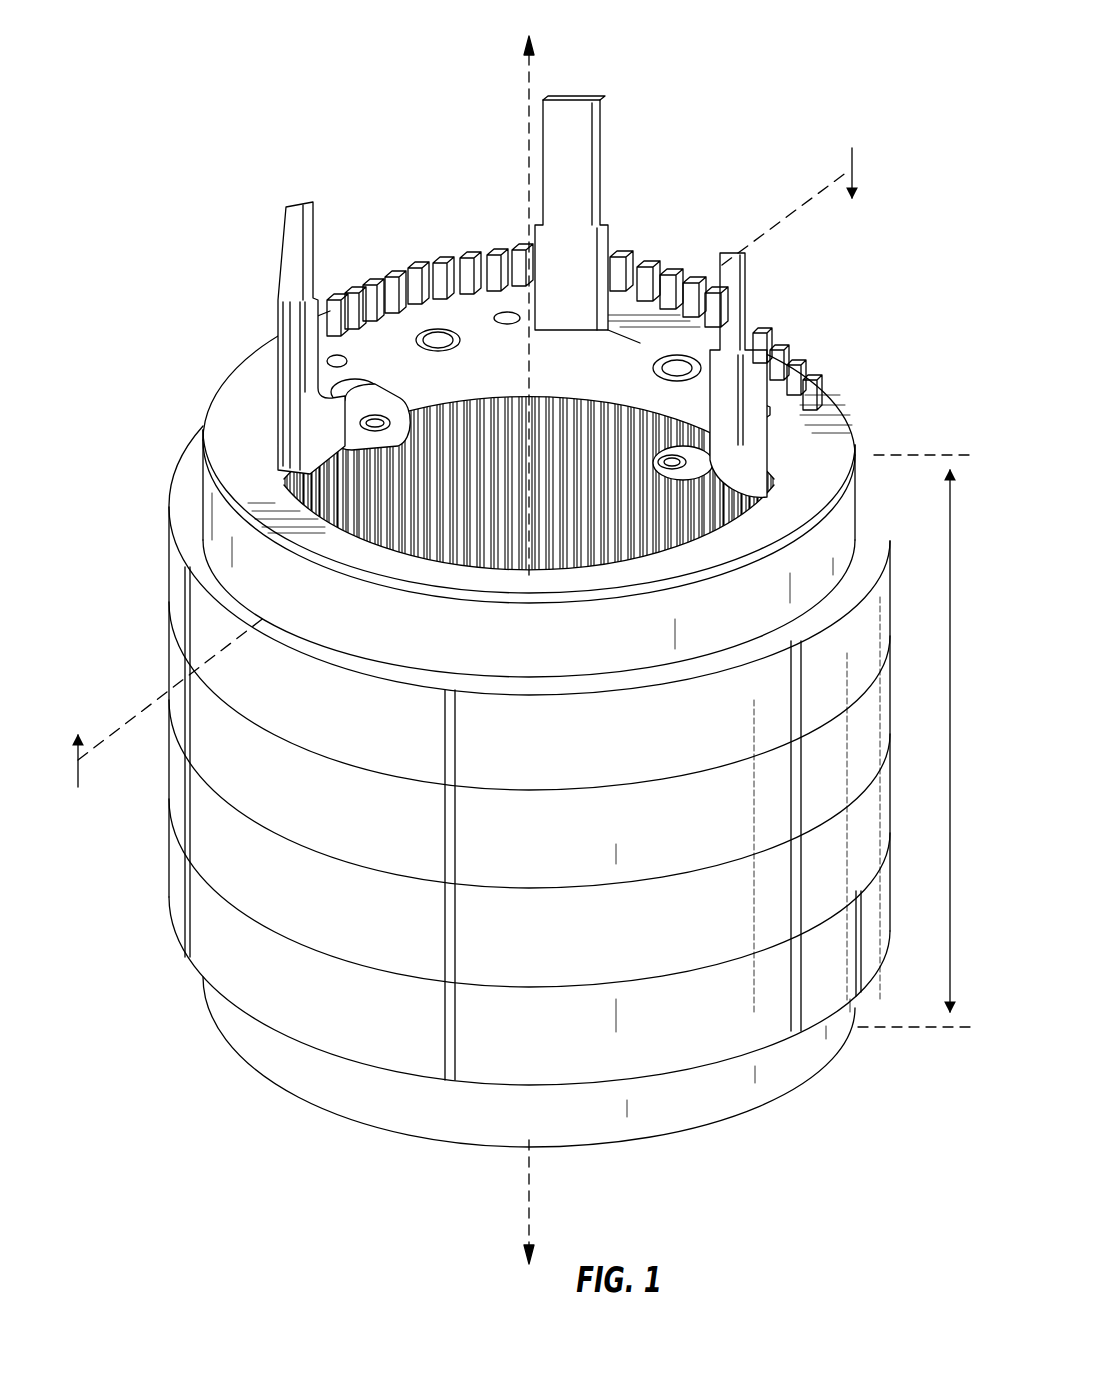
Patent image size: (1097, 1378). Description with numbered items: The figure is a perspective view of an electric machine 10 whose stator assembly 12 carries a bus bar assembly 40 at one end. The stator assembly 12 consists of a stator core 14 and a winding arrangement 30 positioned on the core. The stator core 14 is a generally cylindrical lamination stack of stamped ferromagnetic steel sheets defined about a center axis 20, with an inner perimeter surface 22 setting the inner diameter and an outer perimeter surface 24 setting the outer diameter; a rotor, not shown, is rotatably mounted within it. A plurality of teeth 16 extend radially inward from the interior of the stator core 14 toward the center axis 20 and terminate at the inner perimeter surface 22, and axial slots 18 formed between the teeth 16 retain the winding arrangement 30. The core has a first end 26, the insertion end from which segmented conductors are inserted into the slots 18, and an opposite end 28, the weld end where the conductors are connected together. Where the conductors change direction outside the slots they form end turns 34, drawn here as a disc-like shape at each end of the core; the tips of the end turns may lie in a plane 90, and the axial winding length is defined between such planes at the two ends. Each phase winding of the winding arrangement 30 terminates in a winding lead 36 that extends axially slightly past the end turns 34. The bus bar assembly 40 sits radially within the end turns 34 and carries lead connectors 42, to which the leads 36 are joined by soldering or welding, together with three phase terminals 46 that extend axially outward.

The electric machine 10 is at (513, 642).
The stator assembly 12 is at (882, 440).
The stator core 14 is at (878, 710).
The teeth 16 is at (540, 532).
The axial slots 18 is at (627, 533).
The center axis 20 is at (527, 110).
The inner perimeter surface 22 is at (415, 530).
The outer perimeter surface 24 is at (738, 1030).
The first end 26 is at (197, 1042).
The opposite end 28 is at (193, 418).
The winding arrangement 30 is at (805, 378).
The end turns 34 is at (848, 513).
The winding leads 36 is at (700, 290).
The bus bar assembly 40 is at (387, 343).
The lead connectors 42 is at (490, 262).
The phase terminals 46 is at (289, 212).
The plane 90 is at (238, 489).